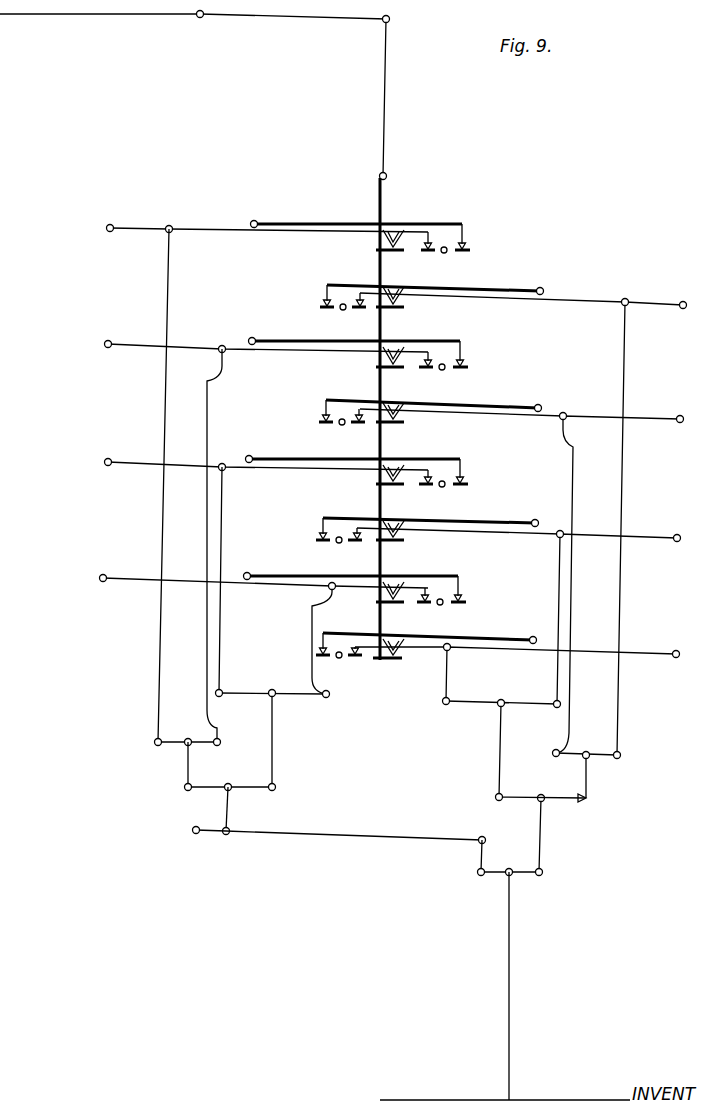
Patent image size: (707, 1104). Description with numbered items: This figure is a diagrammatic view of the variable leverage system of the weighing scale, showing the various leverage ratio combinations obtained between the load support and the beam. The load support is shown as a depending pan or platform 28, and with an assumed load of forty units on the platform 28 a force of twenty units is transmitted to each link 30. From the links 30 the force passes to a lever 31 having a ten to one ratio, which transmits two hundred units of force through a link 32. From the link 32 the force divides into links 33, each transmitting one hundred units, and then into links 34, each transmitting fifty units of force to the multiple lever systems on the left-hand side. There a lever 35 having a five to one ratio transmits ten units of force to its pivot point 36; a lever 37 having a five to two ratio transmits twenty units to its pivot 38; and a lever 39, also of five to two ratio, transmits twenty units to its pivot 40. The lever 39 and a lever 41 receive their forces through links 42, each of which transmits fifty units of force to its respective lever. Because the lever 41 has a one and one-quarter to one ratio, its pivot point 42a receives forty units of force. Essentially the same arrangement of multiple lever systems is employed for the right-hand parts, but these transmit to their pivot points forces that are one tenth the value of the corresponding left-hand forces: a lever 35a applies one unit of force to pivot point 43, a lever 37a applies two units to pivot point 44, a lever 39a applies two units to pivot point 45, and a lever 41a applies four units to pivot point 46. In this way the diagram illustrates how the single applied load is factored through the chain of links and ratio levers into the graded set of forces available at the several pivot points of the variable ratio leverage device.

The load support or platform 28 is at (437, 1098).
The link 30 is at (490, 845).
The lever 31 is at (318, 838).
The link 32 is at (228, 808).
The link 33 is at (188, 760).
The link 34 is at (206, 669).
The lever 35 is at (226, 236).
The lever 35a is at (536, 300).
The pivot point 36 is at (393, 252).
The lever 37 is at (186, 352).
The lever 37a is at (506, 422).
The pivot 38 is at (393, 369).
The lever 39 is at (251, 470).
The lever 39a is at (490, 537).
The pivot 40 is at (393, 486).
The lever 41 is at (185, 585).
The lever 41a is at (475, 656).
The link 42 is at (212, 636).
The pivot point 42a is at (390, 604).
The pivot point 43 is at (396, 309).
The pivot point 44 is at (394, 424).
The pivot point 45 is at (396, 542).
The pivot point 46 is at (385, 661).